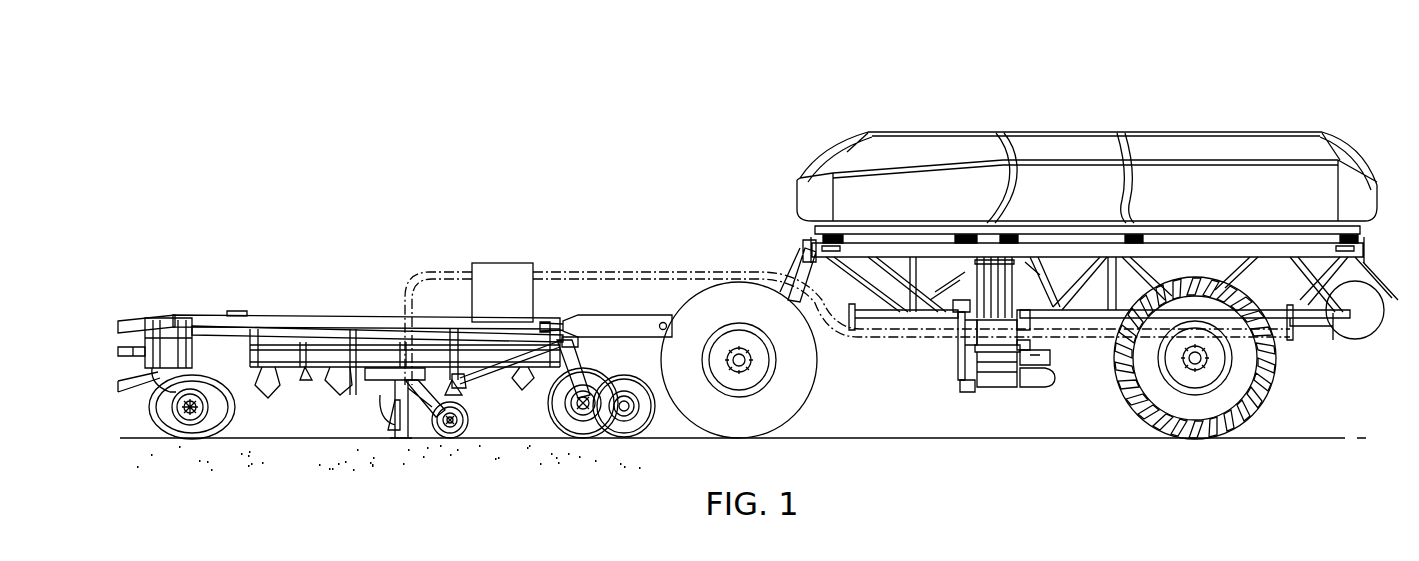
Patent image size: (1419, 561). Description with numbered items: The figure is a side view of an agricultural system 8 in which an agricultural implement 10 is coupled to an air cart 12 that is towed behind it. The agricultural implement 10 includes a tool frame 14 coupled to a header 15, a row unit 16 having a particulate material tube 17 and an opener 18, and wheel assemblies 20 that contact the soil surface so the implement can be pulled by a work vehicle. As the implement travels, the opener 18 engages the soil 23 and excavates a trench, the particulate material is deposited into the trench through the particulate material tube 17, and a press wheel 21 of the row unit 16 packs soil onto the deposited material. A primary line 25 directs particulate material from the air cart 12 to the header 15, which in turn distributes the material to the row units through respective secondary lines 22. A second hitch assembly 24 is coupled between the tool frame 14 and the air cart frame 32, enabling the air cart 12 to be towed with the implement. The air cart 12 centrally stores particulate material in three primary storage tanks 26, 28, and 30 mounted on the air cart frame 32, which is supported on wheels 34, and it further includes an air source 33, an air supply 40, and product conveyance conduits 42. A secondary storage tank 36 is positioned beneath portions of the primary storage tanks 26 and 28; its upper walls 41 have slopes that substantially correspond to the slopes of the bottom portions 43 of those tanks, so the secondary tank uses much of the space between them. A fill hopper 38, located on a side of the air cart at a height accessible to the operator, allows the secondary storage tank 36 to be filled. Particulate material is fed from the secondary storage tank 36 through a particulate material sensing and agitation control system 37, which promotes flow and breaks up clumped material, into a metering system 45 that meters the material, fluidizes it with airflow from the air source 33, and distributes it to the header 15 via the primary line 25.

The agricultural system 8 is at (565, 103).
The agricultural implement 10 is at (339, 265).
The air cart 12 is at (1082, 66).
The tool frame 14 is at (386, 332).
The header 15 is at (515, 271).
The row unit 16 is at (380, 432).
The particulate material tube 17 is at (412, 412).
The opener 18 is at (396, 440).
The wheel assemblies 20 is at (190, 440).
The press wheel 21 is at (468, 422).
The secondary lines 22 is at (457, 270).
The soil 23 is at (497, 432).
The second hitch assembly 24 is at (565, 321).
The primary line 25 is at (590, 271).
The primary storage tank 26 is at (936, 133).
The primary storage tank 28 is at (1063, 133).
The primary storage tank 30 is at (1237, 131).
The air cart frame 32 is at (1345, 268).
The air source 33 is at (1367, 318).
The wheels 34 is at (796, 383).
The secondary storage tank 36 is at (935, 296).
The particulate material sensing and agitation control system 37 is at (970, 341).
The fill hopper 38 is at (1001, 331).
The air supply 40 is at (1050, 352).
The upper walls 41 is at (1000, 230).
The product conveyance conduits 42 is at (960, 328).
The bottom portions 43 is at (958, 285).
The metering system 45 is at (967, 392).